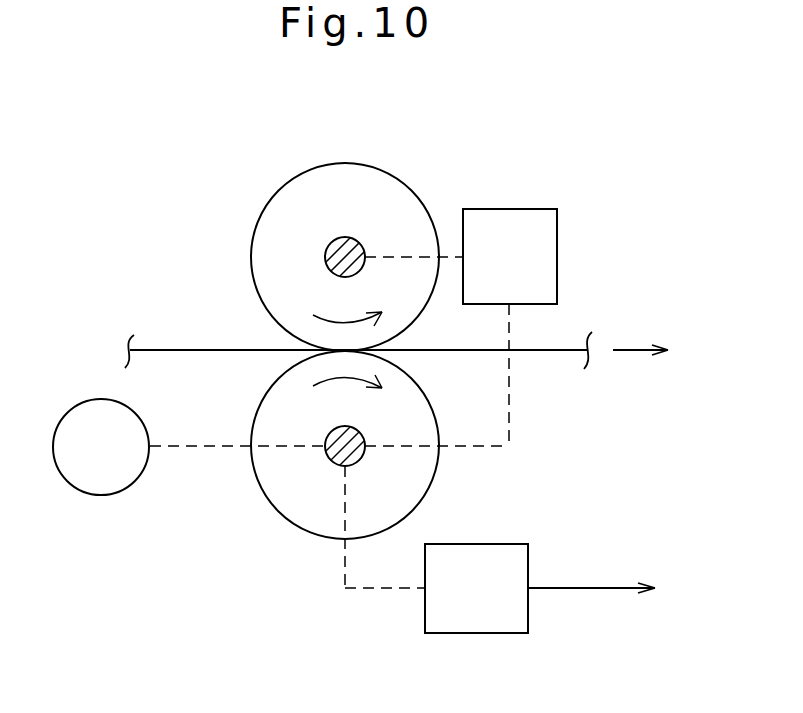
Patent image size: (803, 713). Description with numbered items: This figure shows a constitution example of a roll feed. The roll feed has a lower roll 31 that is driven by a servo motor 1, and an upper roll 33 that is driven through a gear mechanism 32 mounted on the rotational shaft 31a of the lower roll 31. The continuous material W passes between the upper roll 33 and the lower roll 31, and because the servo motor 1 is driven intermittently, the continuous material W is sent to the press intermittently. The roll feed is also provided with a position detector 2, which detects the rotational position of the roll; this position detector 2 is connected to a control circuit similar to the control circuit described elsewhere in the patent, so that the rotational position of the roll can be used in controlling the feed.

The upper roll 33 is at (273, 197).
The gear mechanism 32 is at (557, 258).
The lower roll 31 is at (270, 530).
The rotational shaft 31a is at (365, 455).
The servo motor 1 is at (82, 493).
The continuous material W is at (553, 352).
The position detector 2 is at (528, 578).